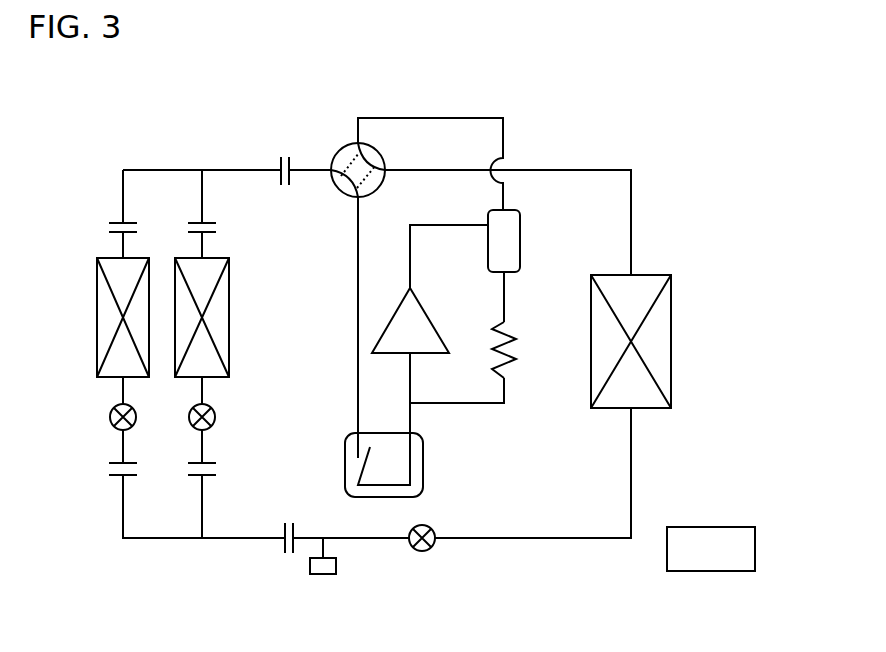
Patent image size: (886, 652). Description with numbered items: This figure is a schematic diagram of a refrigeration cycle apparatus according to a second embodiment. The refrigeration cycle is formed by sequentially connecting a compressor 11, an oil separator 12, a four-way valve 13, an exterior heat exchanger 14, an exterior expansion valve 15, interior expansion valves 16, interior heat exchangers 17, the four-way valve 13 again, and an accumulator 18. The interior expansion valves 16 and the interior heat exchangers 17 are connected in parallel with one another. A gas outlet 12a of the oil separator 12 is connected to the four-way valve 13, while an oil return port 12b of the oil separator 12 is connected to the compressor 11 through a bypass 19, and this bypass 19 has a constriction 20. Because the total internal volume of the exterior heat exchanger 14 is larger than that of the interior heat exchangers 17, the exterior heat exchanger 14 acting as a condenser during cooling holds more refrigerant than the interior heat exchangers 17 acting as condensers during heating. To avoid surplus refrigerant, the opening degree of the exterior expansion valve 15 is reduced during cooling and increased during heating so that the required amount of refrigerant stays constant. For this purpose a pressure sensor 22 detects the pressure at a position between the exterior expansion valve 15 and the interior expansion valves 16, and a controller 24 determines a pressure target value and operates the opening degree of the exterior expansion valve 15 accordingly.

The compressor 11 is at (435, 325).
The oil separator 12 is at (523, 240).
The gas outlet 12a is at (505, 207).
The oil return port 12b is at (508, 277).
The four-way valve 13 is at (338, 148).
The exterior heat exchanger 14 is at (650, 273).
The exterior expansion valve 15 is at (422, 553).
The interior expansion valves 16 is at (110, 417).
The interior heat exchangers 17 is at (97, 293).
The accumulator 18 is at (423, 458).
The bypass 19 is at (500, 407).
The constriction 20 is at (505, 370).
The pressure sensor 22 is at (322, 575).
The controller 24 is at (711, 549).